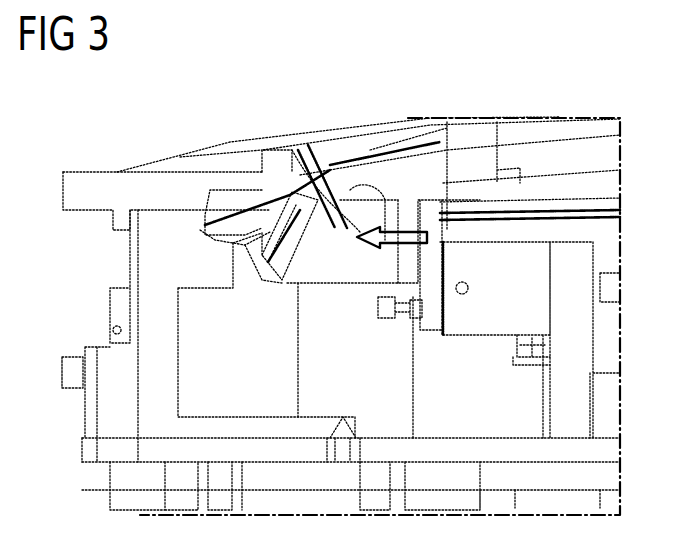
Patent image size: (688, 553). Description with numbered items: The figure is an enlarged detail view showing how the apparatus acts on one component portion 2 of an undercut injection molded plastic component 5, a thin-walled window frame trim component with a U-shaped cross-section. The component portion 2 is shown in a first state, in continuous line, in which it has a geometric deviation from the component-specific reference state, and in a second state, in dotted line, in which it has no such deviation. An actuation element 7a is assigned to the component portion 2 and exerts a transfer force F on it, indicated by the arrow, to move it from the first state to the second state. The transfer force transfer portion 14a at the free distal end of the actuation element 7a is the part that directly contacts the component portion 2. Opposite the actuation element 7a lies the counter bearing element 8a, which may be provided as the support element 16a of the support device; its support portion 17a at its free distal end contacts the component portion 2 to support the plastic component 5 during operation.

The counter bearing element 8a is at (168, 223).
The support element 16a is at (166, 317).
The support portion 17a is at (211, 220).
The component portion 2 is at (323, 163).
The actuation element 7a is at (373, 210).
The transfer force F is at (388, 231).
The plastic component 5 is at (560, 140).
The transfer force transfer portion 14a is at (335, 253).